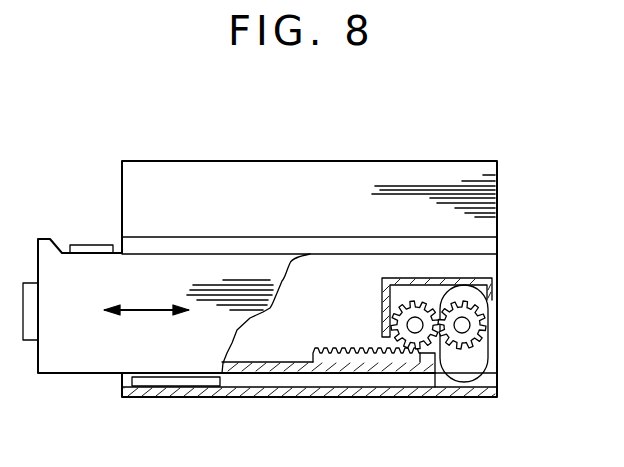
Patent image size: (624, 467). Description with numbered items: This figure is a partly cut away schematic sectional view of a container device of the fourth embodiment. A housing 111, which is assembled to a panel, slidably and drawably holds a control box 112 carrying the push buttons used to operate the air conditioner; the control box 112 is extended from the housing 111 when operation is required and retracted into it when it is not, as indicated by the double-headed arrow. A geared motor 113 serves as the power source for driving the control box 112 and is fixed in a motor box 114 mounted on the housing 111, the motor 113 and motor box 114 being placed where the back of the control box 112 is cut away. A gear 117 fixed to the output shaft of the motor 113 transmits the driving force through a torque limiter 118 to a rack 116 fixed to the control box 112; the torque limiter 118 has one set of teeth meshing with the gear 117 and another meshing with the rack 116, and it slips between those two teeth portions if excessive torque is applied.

The housing 111 is at (456, 186).
The control box 112 is at (66, 362).
The geared motor 113 is at (467, 323).
The motor box 114 is at (462, 280).
The rack 116 is at (333, 352).
The gear 117 is at (476, 330).
The torque limiter 118 is at (414, 341).